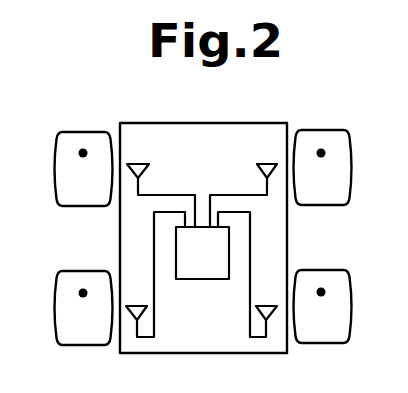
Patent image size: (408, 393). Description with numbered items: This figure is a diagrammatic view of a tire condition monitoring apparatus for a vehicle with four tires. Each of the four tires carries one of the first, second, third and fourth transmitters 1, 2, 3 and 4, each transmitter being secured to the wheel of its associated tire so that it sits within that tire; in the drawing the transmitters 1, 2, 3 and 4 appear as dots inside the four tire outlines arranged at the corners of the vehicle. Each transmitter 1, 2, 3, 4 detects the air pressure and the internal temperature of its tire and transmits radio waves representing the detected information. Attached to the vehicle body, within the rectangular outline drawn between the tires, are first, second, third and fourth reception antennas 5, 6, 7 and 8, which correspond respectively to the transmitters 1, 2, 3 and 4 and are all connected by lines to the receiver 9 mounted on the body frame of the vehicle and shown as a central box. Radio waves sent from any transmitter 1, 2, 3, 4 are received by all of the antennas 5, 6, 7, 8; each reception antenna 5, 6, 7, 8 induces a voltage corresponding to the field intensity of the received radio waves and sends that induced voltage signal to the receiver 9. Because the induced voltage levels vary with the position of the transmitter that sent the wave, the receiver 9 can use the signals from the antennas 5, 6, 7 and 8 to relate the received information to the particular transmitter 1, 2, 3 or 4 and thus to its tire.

The first transmitter 1 is at (324, 153).
The second transmitter 2 is at (324, 292).
The third transmitter 3 is at (80, 153).
The fourth transmitter 4 is at (80, 293).
The first reception antenna 5 is at (262, 164).
The second reception antenna 6 is at (266, 306).
The third reception antenna 7 is at (144, 164).
The fourth reception antenna 8 is at (137, 306).
The receiver 9 is at (200, 279).